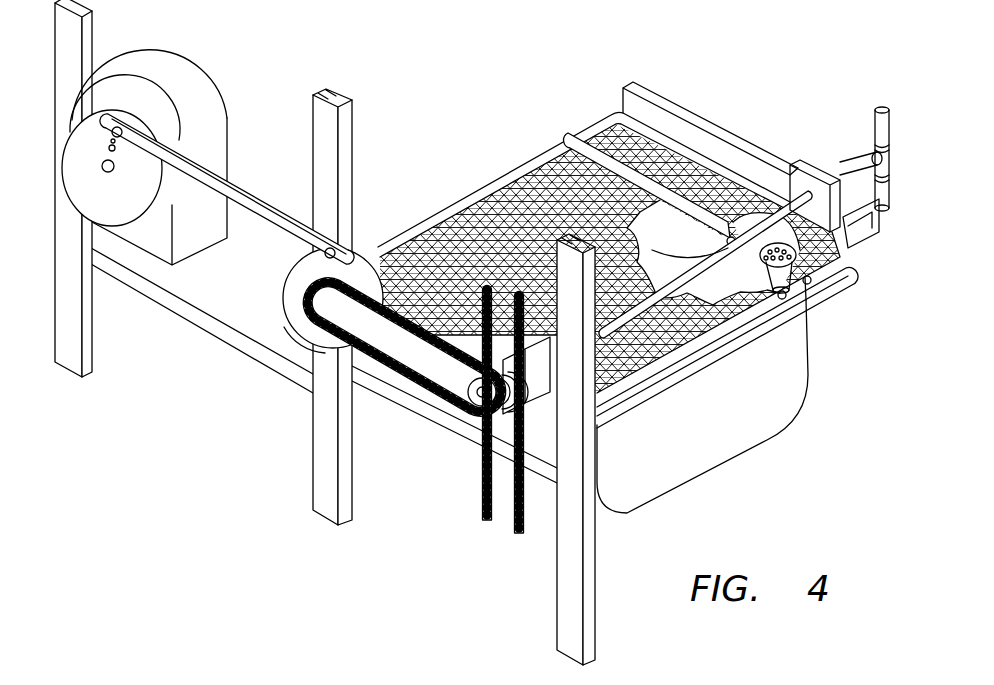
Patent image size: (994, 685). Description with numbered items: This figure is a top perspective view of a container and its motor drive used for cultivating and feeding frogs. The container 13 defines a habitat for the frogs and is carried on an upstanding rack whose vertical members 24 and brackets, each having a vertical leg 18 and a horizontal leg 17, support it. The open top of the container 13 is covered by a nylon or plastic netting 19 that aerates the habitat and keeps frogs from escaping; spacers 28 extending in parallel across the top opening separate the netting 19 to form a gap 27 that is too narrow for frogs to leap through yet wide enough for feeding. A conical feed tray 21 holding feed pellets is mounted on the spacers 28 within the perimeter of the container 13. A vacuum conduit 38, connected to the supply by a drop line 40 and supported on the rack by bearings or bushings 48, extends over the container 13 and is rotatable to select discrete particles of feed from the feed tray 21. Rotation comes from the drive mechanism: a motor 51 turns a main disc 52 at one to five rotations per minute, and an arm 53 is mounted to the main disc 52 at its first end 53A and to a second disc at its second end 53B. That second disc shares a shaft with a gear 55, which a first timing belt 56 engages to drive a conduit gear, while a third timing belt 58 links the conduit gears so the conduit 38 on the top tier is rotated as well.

The container 13 is at (733, 458).
The horizontal leg 17 is at (850, 272).
The vertical leg 18 is at (875, 234).
The netting 19 is at (500, 190).
The feed tray 21 is at (840, 290).
The vertical members 24 is at (352, 120).
The gap 27 is at (566, 136).
The spacers 28 is at (868, 272).
The conduit 38 is at (863, 158).
The drop line 40 is at (883, 106).
The bearings or bushings 48 is at (800, 168).
The motor 51 is at (172, 42).
The main disc 52 is at (110, 207).
The arm 53 is at (207, 160).
The first end of arm 53A is at (118, 128).
The second end of arm 53B is at (330, 240).
The gear 55 is at (327, 382).
The first timing belt 56 is at (437, 388).
The third timing belt 58 is at (511, 520).